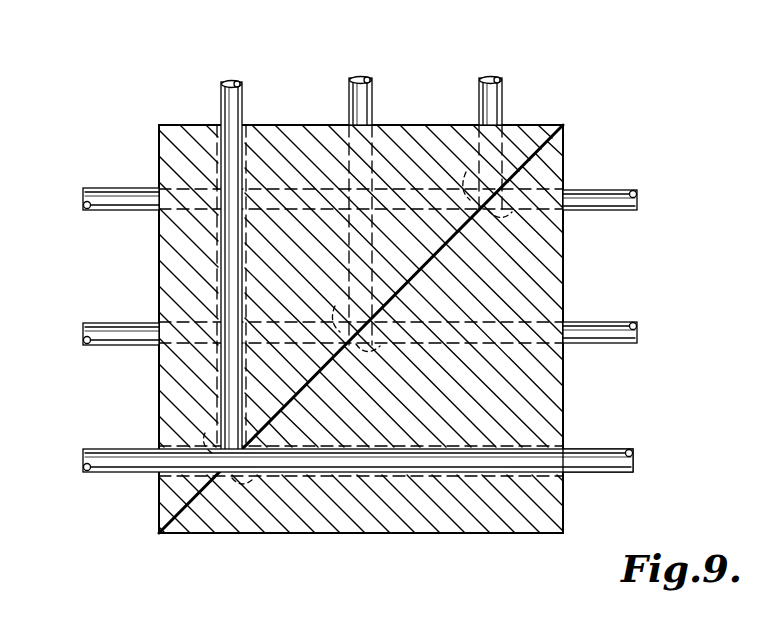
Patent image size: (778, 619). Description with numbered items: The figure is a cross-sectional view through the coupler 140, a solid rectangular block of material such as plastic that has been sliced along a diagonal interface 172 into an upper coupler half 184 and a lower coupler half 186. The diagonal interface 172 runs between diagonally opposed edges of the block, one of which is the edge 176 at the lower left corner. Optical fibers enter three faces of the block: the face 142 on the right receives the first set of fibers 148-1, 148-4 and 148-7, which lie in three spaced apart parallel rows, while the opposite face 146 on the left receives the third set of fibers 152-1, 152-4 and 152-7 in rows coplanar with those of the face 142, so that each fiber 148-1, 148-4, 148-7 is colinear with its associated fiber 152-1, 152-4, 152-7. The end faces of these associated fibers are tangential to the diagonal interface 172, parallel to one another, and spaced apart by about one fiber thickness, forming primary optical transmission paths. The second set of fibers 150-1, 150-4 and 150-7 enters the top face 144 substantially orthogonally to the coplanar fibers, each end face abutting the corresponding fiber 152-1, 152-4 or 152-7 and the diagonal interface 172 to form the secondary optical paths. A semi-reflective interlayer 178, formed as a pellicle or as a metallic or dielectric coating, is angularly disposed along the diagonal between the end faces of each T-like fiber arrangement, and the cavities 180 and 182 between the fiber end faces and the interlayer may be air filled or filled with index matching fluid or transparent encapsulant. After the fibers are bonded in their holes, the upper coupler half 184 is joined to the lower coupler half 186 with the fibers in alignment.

The coupler 140 is at (170, 105).
The face 142 is at (563, 398).
The face 144 is at (428, 124).
The face 146 is at (159, 380).
The optical fiber 148-1 is at (606, 198).
The optical fiber 148-4 is at (606, 330).
The optical fiber 148-7 is at (612, 452).
The optical fiber 150-1 is at (500, 100).
The optical fiber 150-4 is at (370, 90).
The optical fiber 150-7 is at (239, 88).
The optical fiber 152-1 is at (95, 190).
The optical fiber 152-4 is at (97, 325).
The optical fiber 152-7 is at (100, 453).
The diagonal interface 172 is at (185, 512).
The diagonally opposed edge 176 is at (159, 533).
The semi-reflective interlayer 178 is at (440, 255).
The cavity 180 is at (468, 182).
The cavity 182 is at (506, 214).
The upper coupler half 184 is at (286, 143).
The lower coupler half 186 is at (503, 515).